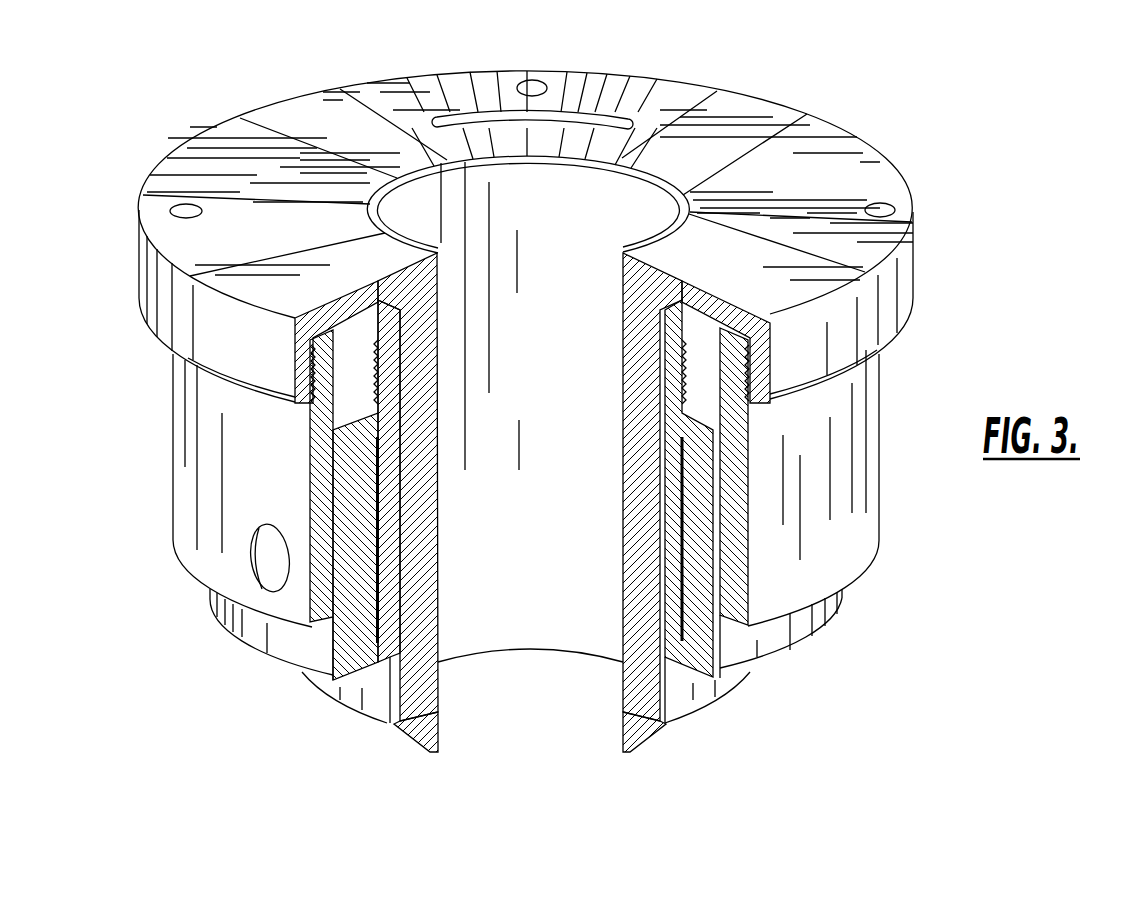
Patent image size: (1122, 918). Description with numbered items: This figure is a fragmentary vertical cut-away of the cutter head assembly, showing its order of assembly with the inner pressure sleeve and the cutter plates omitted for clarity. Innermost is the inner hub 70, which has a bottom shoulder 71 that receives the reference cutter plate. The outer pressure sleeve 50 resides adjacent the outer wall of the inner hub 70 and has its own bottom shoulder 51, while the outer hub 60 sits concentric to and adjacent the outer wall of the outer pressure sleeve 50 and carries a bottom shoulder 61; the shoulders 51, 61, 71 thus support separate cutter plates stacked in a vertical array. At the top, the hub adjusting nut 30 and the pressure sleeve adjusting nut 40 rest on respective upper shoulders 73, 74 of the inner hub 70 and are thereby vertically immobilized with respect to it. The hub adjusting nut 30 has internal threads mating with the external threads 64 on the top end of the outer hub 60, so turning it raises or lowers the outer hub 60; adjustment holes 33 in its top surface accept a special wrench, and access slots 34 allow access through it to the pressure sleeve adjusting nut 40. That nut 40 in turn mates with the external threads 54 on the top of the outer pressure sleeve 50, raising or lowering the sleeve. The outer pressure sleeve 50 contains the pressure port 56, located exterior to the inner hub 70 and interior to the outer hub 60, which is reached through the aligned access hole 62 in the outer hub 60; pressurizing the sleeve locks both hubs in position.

The hub adjusting nut 30 is at (343, 55).
The adjustment holes 33 is at (186, 205).
The access slots 34 is at (477, 117).
The pressure sleeve adjusting nut 40 is at (297, 322).
The outer pressure sleeve 50 is at (703, 545).
The bottom shoulder 51 is at (712, 680).
The external threads 54 is at (683, 393).
The pressure port 56 is at (382, 606).
The outer hub 60 is at (178, 463).
The bottom shoulder 61 is at (780, 638).
The access hole 62 is at (264, 565).
The external threads 64 is at (298, 412).
The inner hub 70 is at (515, 541).
The bottom shoulder 71 is at (643, 732).
The upper shoulder 73 is at (628, 302).
The upper shoulder 74 is at (645, 348).